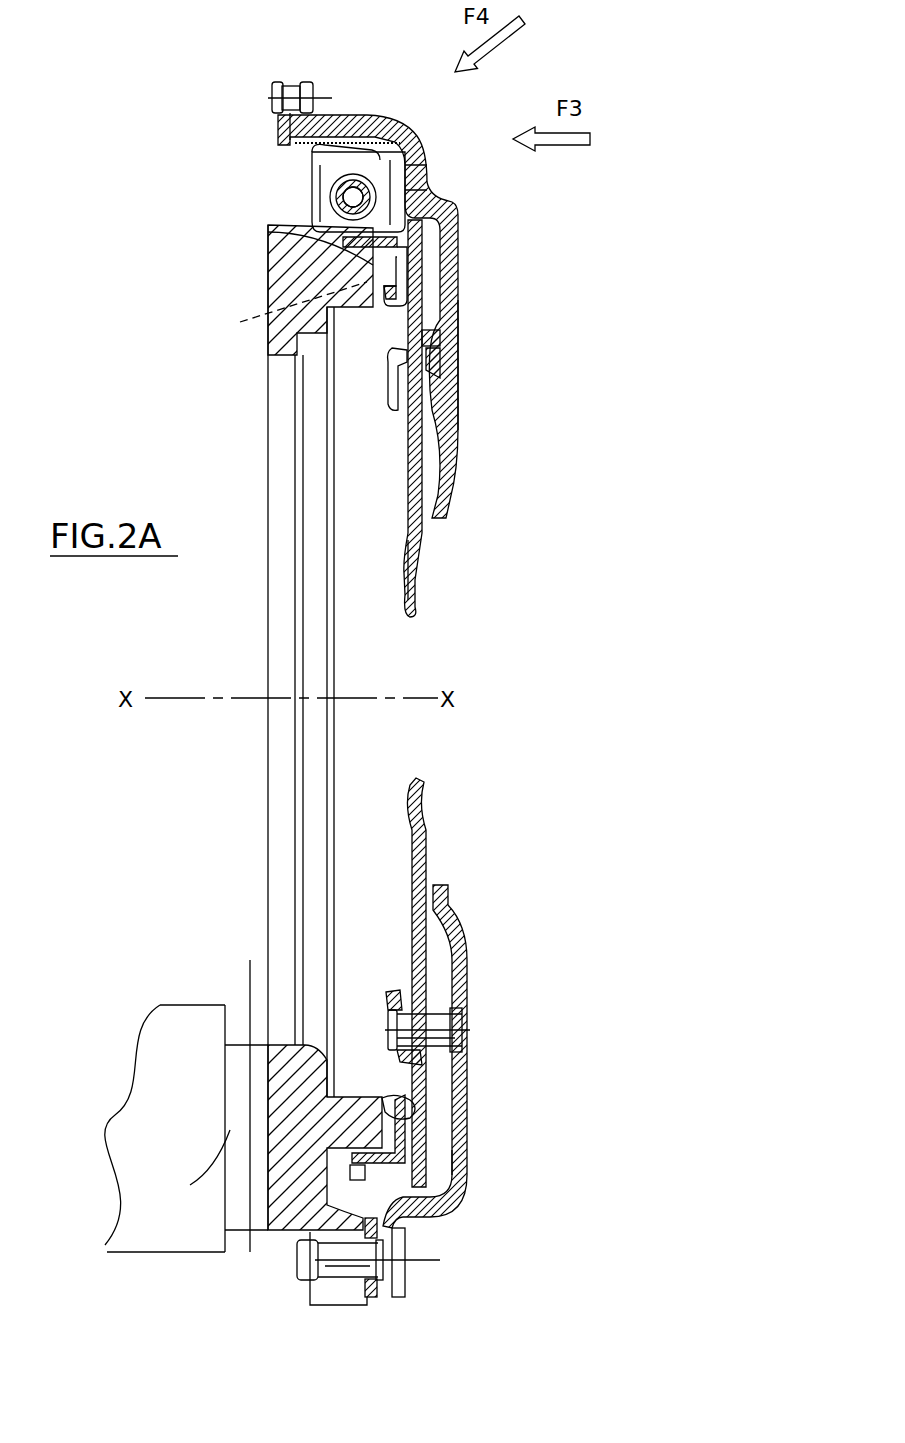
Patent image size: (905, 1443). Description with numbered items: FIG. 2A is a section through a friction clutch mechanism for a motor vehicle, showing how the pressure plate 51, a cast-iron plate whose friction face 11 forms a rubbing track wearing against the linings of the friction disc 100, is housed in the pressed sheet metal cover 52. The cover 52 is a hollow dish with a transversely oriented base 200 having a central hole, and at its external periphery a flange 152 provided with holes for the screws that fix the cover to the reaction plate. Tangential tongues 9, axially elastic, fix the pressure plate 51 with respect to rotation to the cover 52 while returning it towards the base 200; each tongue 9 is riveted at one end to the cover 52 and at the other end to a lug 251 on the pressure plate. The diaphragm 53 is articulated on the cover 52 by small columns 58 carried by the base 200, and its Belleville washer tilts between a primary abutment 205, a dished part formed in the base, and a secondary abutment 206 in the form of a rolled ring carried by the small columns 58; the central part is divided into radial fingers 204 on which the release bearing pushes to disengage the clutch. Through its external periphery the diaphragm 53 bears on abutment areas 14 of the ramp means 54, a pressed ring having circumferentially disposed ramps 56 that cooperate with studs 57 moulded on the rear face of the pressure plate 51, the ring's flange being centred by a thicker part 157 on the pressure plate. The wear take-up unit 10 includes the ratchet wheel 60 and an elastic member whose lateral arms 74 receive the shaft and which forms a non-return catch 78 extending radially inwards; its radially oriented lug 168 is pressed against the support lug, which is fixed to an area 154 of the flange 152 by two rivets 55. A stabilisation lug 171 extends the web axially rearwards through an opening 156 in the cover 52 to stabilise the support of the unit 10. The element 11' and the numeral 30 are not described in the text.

The tangential tongues 9 is at (410, 1290).
The unit 10 is at (305, 172).
The friction face 11 is at (241, 1137).
The hub portion 11' is at (182, 1169).
The abutment areas 14 is at (420, 1140).
The plate 30 is at (450, 892).
The pressure plate 51 is at (265, 262).
The cover 52 is at (462, 487).
The diaphragm 53 is at (428, 568).
The ramp means 54 is at (422, 322).
The rivets 55 is at (415, 238).
The ramps 56 is at (286, 310).
The studs 57 is at (375, 310).
The small columns 58 is at (462, 1030).
The ratchet wheel 60 is at (337, 203).
The lateral arm 74 is at (318, 160).
The non-return catch 78 is at (370, 140).
The friction disc 100 is at (135, 1255).
The flange 152 is at (291, 76).
The area 154 is at (300, 80).
The opening 156 is at (395, 128).
The thicker part 157 is at (268, 236).
The lug 168 is at (293, 83).
The stabilisation lug 171 is at (425, 158).
The base 200 is at (467, 1172).
The radial fingers 204 is at (428, 868).
The primary abutment 205 is at (430, 378).
The secondary abutment 206 is at (438, 340).
The lug 251 is at (310, 1303).